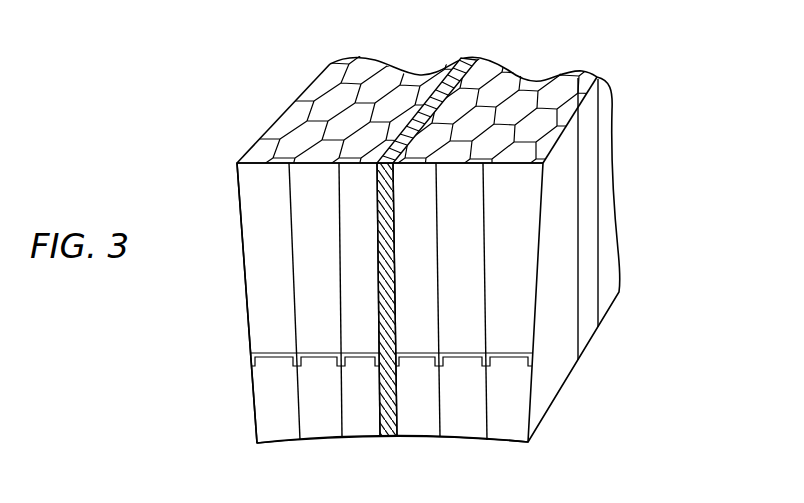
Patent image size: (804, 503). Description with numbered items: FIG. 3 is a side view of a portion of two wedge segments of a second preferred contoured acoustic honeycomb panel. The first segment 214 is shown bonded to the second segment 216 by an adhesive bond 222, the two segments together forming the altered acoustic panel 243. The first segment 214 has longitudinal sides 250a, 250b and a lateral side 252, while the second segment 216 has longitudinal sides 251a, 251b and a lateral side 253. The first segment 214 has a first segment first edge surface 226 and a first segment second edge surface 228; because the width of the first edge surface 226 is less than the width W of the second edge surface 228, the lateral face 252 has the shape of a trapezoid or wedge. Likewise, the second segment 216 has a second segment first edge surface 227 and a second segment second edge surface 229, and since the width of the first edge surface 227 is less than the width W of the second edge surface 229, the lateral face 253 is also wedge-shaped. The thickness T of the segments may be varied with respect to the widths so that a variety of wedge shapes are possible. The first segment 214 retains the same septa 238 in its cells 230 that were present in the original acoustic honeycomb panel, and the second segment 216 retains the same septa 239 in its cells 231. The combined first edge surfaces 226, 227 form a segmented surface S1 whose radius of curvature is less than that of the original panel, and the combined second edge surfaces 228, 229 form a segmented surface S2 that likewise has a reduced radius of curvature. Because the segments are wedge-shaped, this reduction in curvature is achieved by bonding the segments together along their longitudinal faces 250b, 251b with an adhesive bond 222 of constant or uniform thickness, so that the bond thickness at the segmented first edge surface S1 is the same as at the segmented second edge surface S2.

The first segment 214 is at (258, 332).
The second segment 216 is at (513, 263).
The adhesive bond 222 is at (463, 68).
The first segment first edge surface 226 is at (320, 438).
The second segment first edge surface 227 is at (445, 438).
The first segment second edge surface 228 is at (284, 143).
The second segment second edge surface 229 is at (520, 147).
The cells 230 is at (336, 148).
The cells 231 is at (531, 154).
The septa 238 is at (328, 357).
The septa 239 is at (509, 350).
The altered acoustic panel 243 is at (222, 160).
The longitudinal side 250a is at (243, 203).
The longitudinal side 250b is at (377, 260).
The longitudinal side 251a is at (590, 207).
The longitudinal side 251b is at (398, 277).
The lateral side 252 is at (300, 322).
The lateral side 253 is at (473, 332).
The segmented first edge surface S1 is at (362, 436).
The segmented second edge surface S2 is at (375, 155).
The width of second edge surface W is at (376, 215).
The thickness T is at (461, 166).